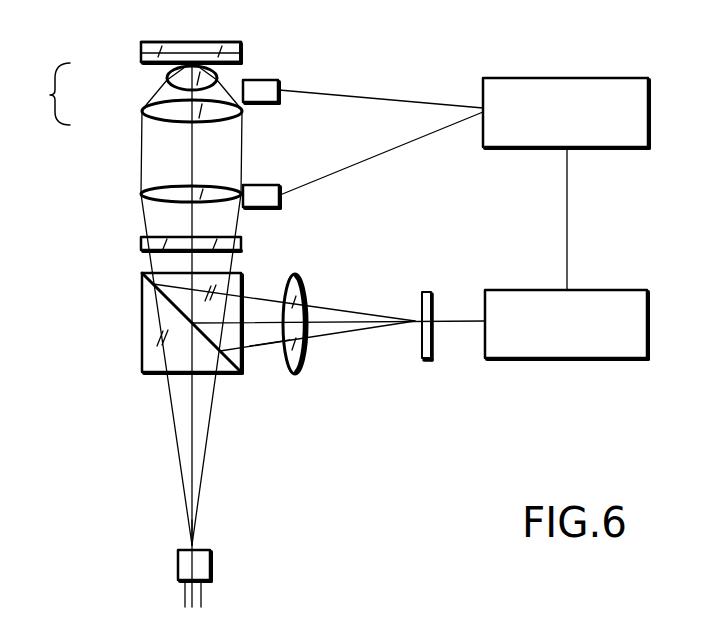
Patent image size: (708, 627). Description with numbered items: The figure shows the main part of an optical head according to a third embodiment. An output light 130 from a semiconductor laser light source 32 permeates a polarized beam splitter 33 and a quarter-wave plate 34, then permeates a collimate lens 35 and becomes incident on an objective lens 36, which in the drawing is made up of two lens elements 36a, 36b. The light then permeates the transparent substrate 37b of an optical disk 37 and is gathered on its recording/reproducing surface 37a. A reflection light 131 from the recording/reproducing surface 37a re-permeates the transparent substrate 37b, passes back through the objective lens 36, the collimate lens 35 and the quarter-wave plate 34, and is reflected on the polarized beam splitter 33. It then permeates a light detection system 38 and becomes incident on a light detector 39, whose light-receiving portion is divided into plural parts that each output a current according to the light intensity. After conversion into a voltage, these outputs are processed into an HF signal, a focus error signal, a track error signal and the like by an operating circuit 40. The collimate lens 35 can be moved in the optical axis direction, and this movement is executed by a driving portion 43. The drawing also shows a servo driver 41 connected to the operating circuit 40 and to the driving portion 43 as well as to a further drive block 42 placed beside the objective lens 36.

The semiconductor laser light source 32 is at (178, 568).
The polarized beam splitter 33 is at (142, 316).
The λ/4 plate 34 is at (141, 243).
The collimate lens 35 is at (141, 193).
The objective lens 36 is at (42, 94).
The first objective lens 36a is at (142, 110).
The second objective lens 36b is at (167, 78).
The optical disk 37 is at (243, 45).
The recording/reproducing surface 37a is at (141, 43).
The transparent substrate 37b is at (141, 58).
The light detection system 38 is at (296, 275).
The light detector 39 is at (427, 292).
The operating circuit 40 is at (515, 290).
The servo driver 41 is at (510, 78).
The actuator 42 is at (268, 80).
The driving portion 43 is at (270, 185).
The output light 130 is at (203, 520).
The reflection light 131 is at (265, 345).